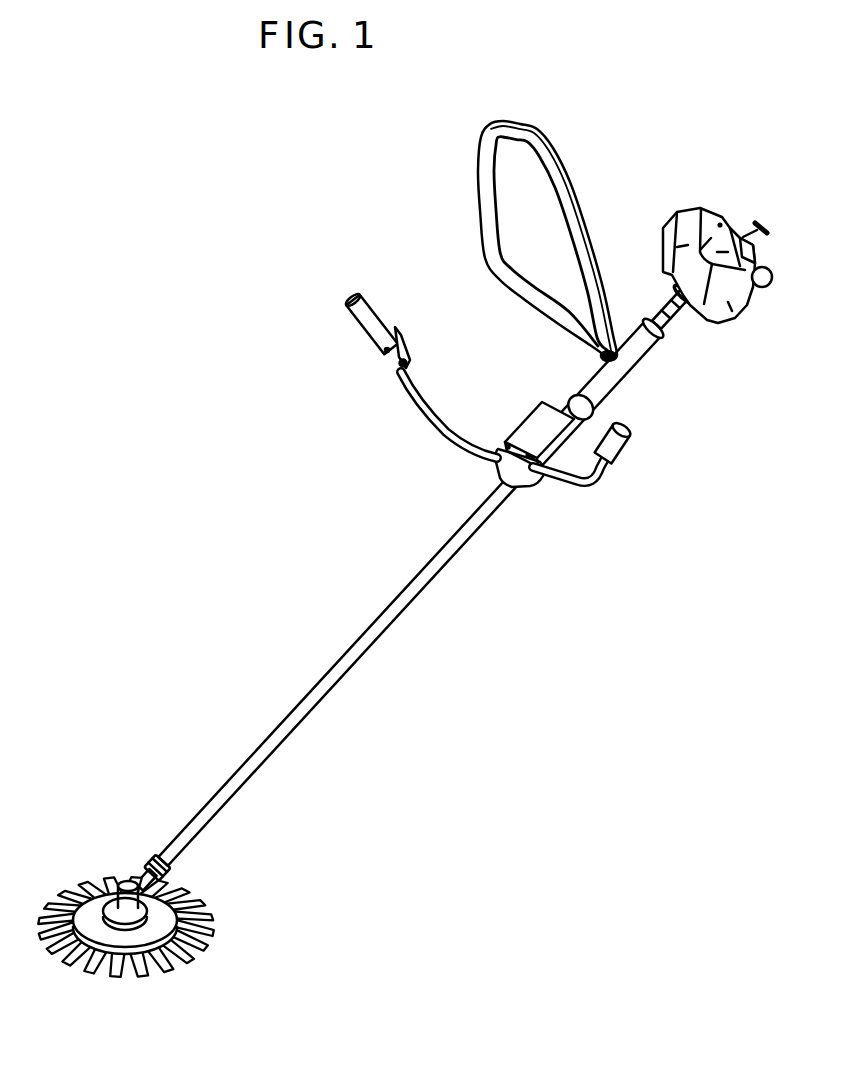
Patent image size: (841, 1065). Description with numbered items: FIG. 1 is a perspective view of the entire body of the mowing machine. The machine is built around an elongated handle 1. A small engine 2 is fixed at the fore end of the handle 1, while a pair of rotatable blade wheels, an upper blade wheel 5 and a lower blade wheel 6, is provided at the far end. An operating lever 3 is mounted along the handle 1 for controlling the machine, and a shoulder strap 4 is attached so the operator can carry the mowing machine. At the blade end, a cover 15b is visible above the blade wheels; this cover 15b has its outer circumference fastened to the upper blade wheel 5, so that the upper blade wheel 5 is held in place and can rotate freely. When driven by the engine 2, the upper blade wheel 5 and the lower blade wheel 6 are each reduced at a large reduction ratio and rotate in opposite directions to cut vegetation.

The handle 1 is at (347, 653).
The small engine 2 is at (692, 231).
The operating lever 3 is at (413, 401).
The shoulder strap 4 is at (482, 205).
The upper blade wheel 5 is at (210, 916).
The lower blade wheel 6 is at (213, 932).
The cover 15b is at (100, 905).